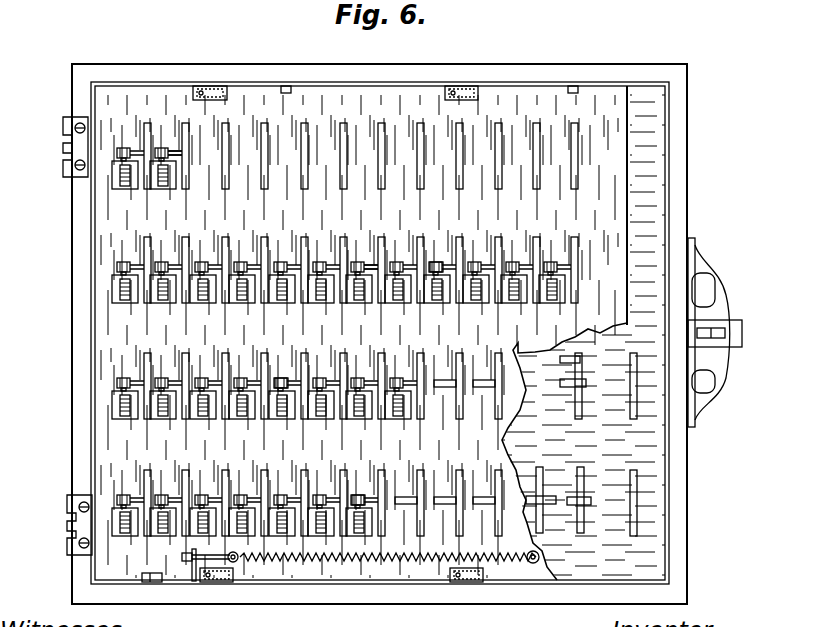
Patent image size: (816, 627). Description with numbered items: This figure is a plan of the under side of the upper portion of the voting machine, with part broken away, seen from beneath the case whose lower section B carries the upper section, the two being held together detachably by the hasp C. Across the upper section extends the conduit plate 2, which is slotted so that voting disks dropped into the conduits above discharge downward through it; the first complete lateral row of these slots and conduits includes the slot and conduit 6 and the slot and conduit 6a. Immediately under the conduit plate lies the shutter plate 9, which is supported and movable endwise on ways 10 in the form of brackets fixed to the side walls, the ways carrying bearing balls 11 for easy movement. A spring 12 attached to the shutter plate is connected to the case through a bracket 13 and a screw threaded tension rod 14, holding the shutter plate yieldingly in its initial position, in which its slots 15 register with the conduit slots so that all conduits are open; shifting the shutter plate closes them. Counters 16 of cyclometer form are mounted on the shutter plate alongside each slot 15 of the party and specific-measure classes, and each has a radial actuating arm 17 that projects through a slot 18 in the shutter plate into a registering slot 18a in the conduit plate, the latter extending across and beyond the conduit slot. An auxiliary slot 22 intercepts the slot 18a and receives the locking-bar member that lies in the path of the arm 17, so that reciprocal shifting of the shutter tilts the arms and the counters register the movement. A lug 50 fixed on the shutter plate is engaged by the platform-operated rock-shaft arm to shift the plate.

The lower section of the case B is at (72, 325).
The hasp C is at (738, 321).
The conduit plate 2 is at (583, 451).
The slot and conduit 6 is at (584, 486).
The slot and conduit 6a is at (573, 365).
The shutter plate 9 is at (614, 200).
The ways 10 is at (228, 95).
The bearing balls 11 is at (205, 86).
The spring 12 is at (423, 562).
The bracket 13 is at (191, 568).
The screw threaded tension rod 14 is at (230, 556).
The slots 15 is at (417, 181).
The counters 16 is at (127, 191).
The radial actuating arm 17 is at (436, 262).
The slot 18 is at (174, 151).
The slot 18a is at (546, 496).
The auxiliary slot 22 is at (568, 389).
The lug 50 is at (143, 576).